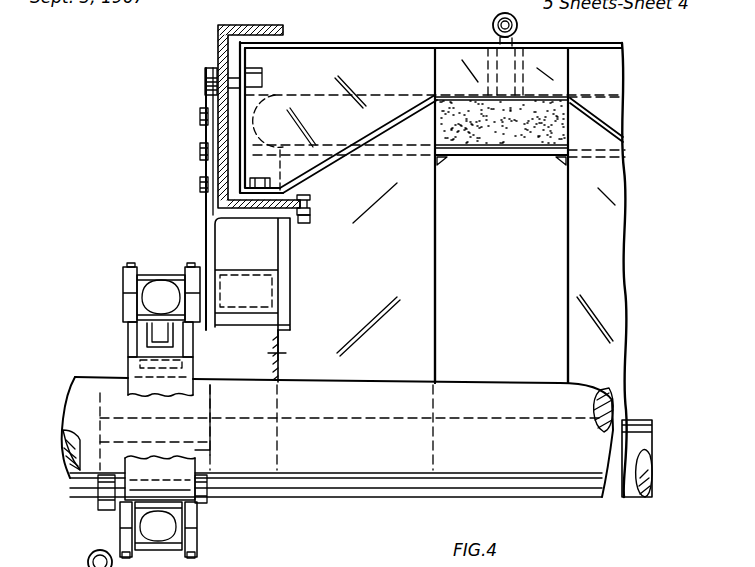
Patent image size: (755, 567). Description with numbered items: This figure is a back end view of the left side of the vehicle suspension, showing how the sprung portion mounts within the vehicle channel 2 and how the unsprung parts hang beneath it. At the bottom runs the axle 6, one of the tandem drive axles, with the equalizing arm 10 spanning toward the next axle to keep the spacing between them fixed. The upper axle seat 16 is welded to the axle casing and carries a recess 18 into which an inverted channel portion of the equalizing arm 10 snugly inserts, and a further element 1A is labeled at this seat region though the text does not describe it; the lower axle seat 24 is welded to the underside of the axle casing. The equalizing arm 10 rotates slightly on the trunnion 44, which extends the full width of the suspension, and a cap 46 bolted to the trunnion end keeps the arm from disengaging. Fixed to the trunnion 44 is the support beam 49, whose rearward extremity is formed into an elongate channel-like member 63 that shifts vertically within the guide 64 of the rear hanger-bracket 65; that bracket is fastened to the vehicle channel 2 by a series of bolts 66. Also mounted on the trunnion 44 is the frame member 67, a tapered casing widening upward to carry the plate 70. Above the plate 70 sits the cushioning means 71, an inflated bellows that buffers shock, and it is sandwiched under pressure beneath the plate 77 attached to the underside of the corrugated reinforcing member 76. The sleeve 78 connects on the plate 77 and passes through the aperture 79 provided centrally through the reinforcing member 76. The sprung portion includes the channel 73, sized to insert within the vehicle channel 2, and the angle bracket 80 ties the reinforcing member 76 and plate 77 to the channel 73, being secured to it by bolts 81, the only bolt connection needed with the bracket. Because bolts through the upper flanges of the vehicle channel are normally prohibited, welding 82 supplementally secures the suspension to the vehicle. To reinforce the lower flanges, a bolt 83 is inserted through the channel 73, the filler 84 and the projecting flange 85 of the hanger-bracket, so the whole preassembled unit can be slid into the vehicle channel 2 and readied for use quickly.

The vehicle channel 2 is at (240, 26).
The axle 6 is at (498, 385).
The equalizing arm 10 is at (114, 409).
The upper axle seat 16 is at (123, 302).
The pivot block 1A is at (160, 337).
The recess 18 is at (157, 337).
The lower axle seat 24 is at (155, 471).
The trunnion 44 is at (650, 437).
The cap 46 is at (100, 493).
The support beam 49 is at (270, 355).
The channel-like member 63 is at (272, 303).
The guide 64 is at (290, 275).
The rear hanger-bracket 65 is at (205, 232).
The bolts 66 is at (200, 150).
The frame member 67 is at (435, 240).
The plate 70 is at (495, 158).
The cushioning means 71 is at (350, 100).
The channel 73 is at (267, 42).
The corrugated reinforcing member 76 is at (358, 57).
The plate 77 is at (597, 94).
The sleeve 78 is at (520, 63).
The aperture 79 is at (483, 62).
The angle bracket 80 is at (387, 133).
The bolts 81 is at (205, 72).
The welding 82 is at (284, 35).
The bolt 83 is at (288, 193).
The filler 84 is at (312, 207).
The projecting flange 85 is at (312, 220).